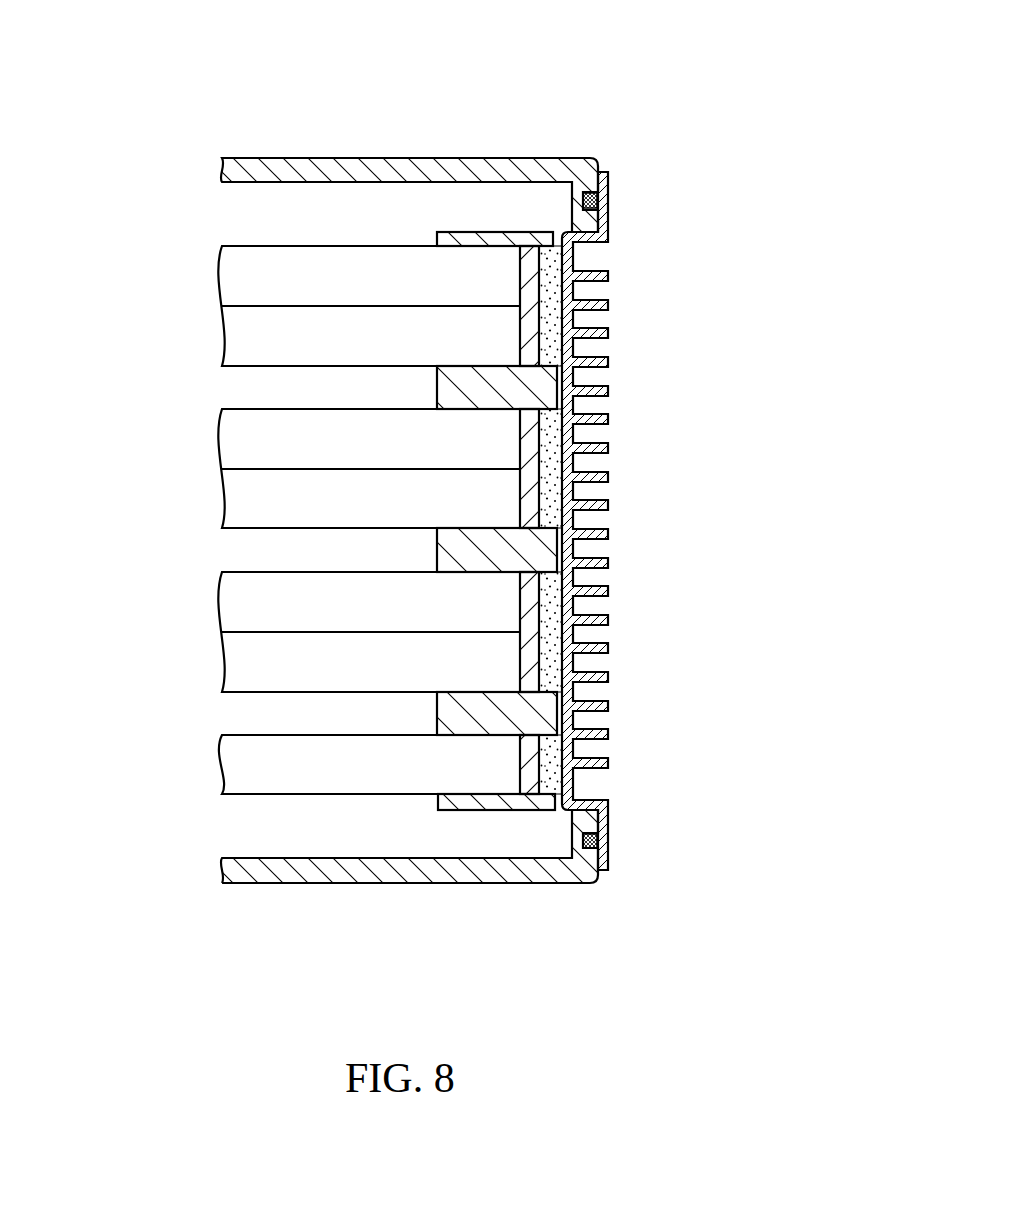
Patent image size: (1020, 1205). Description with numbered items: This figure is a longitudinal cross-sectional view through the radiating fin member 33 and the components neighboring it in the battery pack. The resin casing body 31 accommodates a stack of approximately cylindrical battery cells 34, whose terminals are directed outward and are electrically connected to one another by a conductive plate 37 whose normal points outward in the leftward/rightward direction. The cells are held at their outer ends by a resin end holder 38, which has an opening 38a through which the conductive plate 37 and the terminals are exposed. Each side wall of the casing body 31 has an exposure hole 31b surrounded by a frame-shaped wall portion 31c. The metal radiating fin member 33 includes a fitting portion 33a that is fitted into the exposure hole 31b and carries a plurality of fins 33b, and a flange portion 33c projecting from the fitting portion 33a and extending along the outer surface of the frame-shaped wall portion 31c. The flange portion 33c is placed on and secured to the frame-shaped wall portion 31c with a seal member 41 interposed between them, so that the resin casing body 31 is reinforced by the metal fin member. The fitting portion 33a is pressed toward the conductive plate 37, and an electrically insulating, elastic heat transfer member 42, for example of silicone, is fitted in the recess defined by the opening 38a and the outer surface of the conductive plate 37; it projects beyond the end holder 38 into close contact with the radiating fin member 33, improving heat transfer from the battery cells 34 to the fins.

The casing body 31 is at (277, 158).
The exposure hole 31b is at (570, 222).
The frame-shaped wall portion 31c is at (600, 161).
The radiating fin member 33 is at (667, 527).
The fitting portion 33a is at (573, 436).
The fins 33b is at (607, 390).
The flange portion 33c is at (607, 223).
The battery cell 34 is at (240, 500).
The conductive plate 37 is at (532, 250).
The end holder 38 is at (477, 811).
The opening 38a is at (548, 246).
The seal member 41 is at (607, 198).
The heat transfer member 42 is at (553, 320).